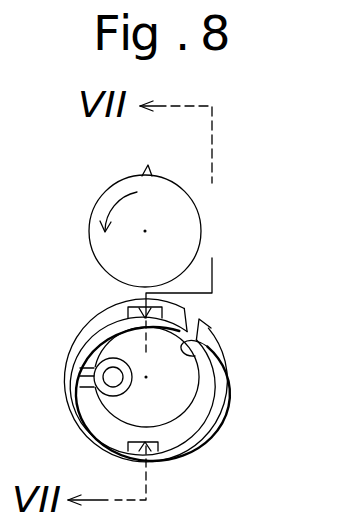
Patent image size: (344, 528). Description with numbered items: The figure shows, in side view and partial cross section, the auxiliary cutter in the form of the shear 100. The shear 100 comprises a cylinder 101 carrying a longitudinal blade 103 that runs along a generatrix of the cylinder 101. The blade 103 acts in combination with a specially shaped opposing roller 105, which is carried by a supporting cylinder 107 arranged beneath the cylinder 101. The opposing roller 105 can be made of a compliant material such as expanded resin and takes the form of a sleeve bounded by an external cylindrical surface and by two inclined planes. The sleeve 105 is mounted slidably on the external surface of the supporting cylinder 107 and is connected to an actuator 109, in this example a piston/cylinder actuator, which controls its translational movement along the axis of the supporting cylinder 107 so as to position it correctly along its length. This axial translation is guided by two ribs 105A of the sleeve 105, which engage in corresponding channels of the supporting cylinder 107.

The shear 100 is at (207, 206).
The cylinder 101 is at (190, 240).
The longitudinal blade 103 is at (146, 172).
The opposing roller 105 is at (222, 414).
The ribs 105A is at (210, 477).
The supporting cylinder 107 is at (192, 354).
The actuator 109 is at (110, 386).